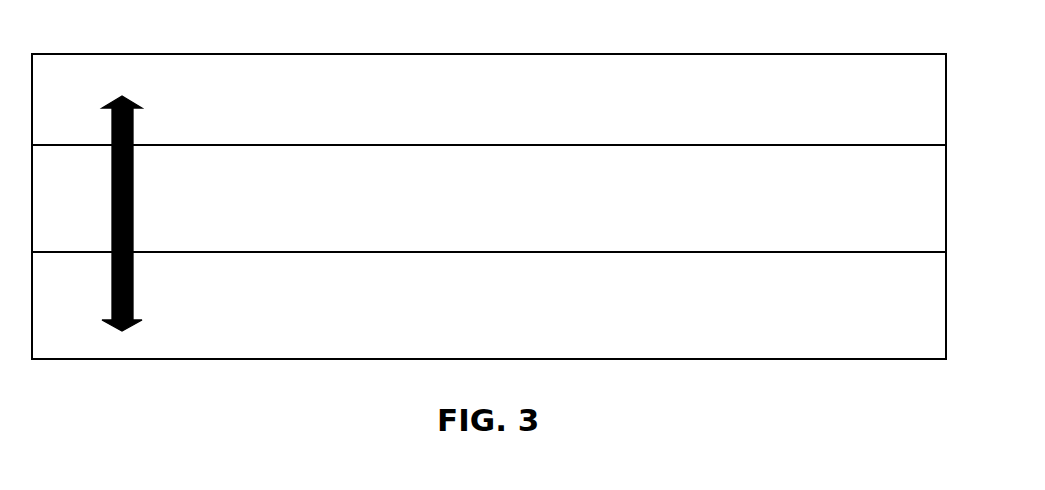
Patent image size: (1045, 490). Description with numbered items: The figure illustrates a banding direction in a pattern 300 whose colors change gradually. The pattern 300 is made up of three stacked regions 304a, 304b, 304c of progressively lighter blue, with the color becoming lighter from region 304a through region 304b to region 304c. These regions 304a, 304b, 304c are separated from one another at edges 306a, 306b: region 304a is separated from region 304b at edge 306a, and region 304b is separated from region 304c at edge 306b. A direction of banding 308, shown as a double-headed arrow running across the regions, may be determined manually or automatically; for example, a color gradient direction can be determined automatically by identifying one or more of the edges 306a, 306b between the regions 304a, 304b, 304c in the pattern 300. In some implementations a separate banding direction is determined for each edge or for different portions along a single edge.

The pattern 300 is at (112, 54).
The region 304a is at (473, 114).
The region 304b is at (473, 212).
The region 304c is at (473, 314).
The edge 306a is at (838, 145).
The edge 306b is at (843, 252).
The direction of banding 308 is at (133, 305).